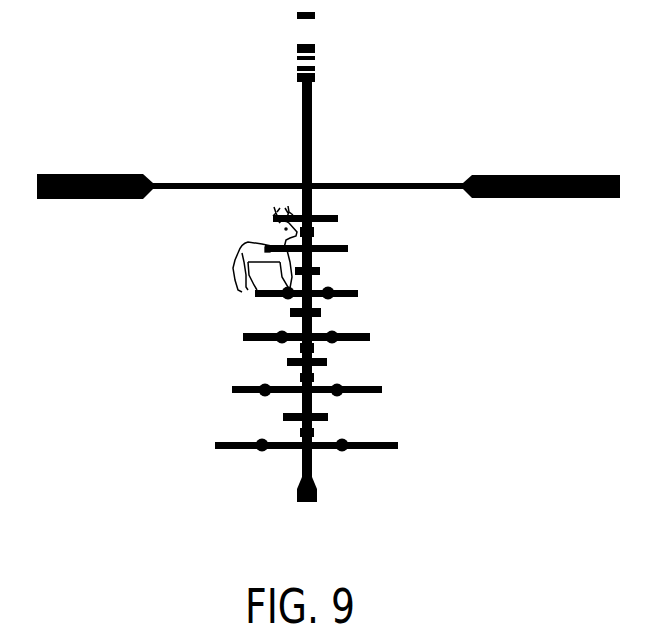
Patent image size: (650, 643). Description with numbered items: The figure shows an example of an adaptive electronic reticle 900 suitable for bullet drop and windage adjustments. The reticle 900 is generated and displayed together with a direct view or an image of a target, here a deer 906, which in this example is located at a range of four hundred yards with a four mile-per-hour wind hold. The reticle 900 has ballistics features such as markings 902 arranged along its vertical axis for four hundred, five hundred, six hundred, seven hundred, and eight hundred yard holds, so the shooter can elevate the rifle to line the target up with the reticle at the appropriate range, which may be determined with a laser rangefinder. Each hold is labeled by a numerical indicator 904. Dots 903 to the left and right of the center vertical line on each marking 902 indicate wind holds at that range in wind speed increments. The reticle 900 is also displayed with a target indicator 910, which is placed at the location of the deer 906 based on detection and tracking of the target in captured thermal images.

The reticle 900 is at (578, 175).
The markings 902 is at (243, 337).
The dots 903 is at (337, 393).
The numerical indicator 904 is at (447, 390).
The deer 906 is at (237, 248).
The target indicator 910 is at (269, 247).